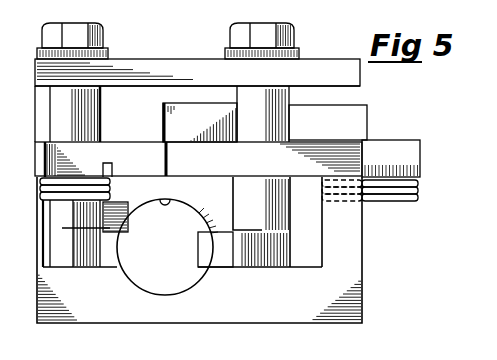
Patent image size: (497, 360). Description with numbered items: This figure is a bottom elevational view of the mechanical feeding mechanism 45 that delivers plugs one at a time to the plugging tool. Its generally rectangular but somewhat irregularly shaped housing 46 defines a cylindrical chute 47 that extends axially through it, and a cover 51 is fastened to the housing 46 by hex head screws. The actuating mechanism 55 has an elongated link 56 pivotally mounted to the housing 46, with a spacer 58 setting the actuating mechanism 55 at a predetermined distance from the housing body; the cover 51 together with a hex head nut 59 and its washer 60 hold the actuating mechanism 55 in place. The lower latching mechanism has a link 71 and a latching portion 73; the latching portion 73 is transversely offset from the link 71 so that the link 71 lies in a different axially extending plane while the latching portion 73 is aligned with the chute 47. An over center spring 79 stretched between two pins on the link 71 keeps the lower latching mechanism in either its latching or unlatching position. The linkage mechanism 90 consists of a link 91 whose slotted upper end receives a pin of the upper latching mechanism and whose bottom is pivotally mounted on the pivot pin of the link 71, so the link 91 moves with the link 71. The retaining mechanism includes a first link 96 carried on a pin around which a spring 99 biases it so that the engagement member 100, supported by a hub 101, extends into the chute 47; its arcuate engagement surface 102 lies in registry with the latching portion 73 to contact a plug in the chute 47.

The mechanical feeding mechanism 45 is at (379, 100).
The housing 46 is at (362, 268).
The chute 47 is at (169, 199).
The cover 51 is at (360, 73).
The actuating mechanism 55 is at (237, 29).
The link 56 is at (150, 143).
The spacer 58 is at (100, 100).
The hex head nut 59 is at (103, 21).
The washer 60 is at (110, 53).
The link 71 is at (405, 146).
The latching portion 73 is at (218, 268).
The over center spring 79 is at (388, 203).
The linkage mechanism 90 is at (196, 101).
The link 91 is at (367, 118).
The first link 96 is at (45, 150).
The spring 99 is at (45, 199).
The engagement member 100 is at (110, 256).
The hub 101 is at (58, 252).
The arcuate engagement surface 102 is at (121, 242).